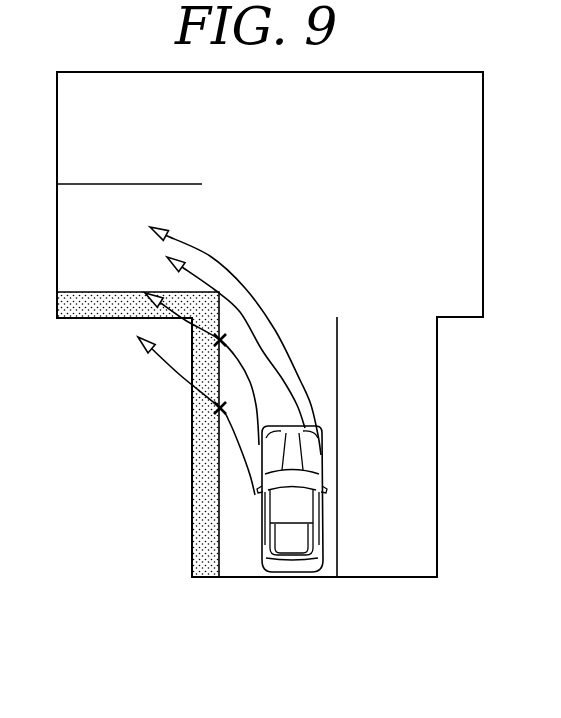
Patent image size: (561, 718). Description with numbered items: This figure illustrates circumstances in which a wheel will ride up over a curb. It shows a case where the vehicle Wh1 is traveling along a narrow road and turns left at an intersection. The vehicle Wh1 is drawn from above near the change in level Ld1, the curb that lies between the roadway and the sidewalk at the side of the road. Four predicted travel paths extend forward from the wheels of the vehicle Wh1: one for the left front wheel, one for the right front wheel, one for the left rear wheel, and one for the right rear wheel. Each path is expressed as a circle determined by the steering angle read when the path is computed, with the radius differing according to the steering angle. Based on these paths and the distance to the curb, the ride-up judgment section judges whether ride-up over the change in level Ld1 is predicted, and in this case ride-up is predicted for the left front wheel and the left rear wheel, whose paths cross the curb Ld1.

The vehicle Wh1 is at (322, 452).
The change in level (curb) Ld1 is at (217, 560).